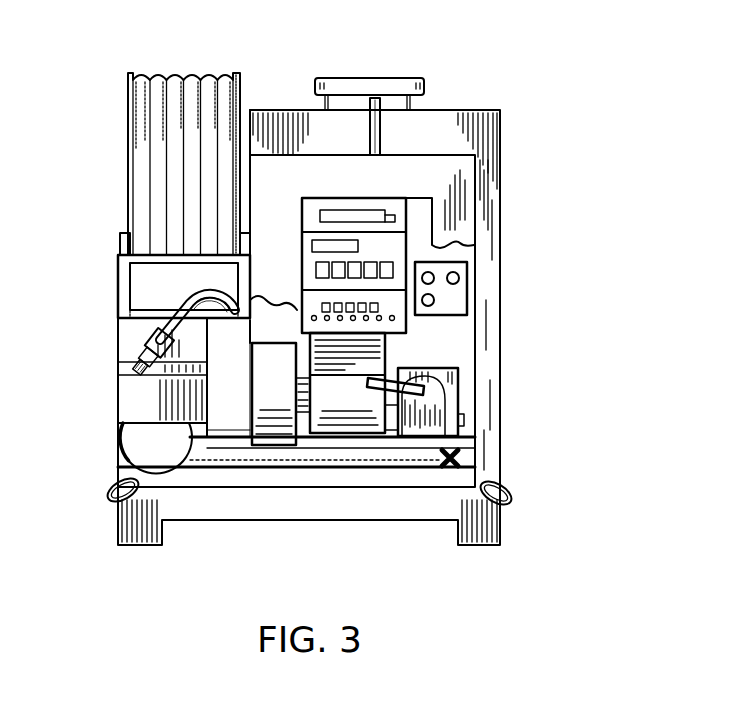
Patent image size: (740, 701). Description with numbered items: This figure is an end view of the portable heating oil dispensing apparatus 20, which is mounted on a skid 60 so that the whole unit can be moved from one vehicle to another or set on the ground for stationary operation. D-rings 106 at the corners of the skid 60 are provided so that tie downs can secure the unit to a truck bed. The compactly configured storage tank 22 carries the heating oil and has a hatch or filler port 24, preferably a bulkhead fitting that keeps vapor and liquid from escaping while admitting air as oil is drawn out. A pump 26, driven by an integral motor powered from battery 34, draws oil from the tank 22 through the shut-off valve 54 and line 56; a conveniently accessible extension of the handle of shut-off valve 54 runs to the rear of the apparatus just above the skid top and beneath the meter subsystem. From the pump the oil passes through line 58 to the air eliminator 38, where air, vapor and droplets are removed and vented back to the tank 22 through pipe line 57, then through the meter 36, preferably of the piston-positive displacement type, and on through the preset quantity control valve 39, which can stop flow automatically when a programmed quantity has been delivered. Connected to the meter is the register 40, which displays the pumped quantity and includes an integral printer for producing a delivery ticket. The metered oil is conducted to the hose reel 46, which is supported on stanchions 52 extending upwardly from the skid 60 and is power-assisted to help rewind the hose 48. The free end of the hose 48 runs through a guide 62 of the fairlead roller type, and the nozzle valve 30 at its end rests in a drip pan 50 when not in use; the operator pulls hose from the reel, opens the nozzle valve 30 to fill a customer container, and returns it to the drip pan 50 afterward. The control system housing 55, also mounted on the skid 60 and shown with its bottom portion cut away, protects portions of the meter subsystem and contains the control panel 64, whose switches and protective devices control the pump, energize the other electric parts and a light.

The apparatus 20 is at (534, 26).
The storage tank 22 is at (500, 132).
The filler port 24 is at (372, 82).
The pump 26 is at (158, 440).
The nozzle valve 30 is at (150, 330).
The battery 34 is at (450, 377).
The meter 36 is at (350, 407).
The air eliminator 38 is at (267, 440).
The preset quantity control valve 39 is at (418, 428).
The register 40 is at (412, 215).
The hose reel 46 is at (127, 88).
The hose 48 is at (174, 82).
The drip pan 50 is at (132, 392).
The stanchions 52 is at (125, 243).
The shut-off valve 54 is at (450, 468).
The control system housing 55 is at (452, 215).
The line 56 is at (295, 458).
The pipe line 57 is at (382, 130).
The line 58 is at (218, 440).
The skid 60 is at (498, 514).
The guide 62 is at (140, 307).
The control panel 64 is at (462, 283).
The D-rings 106 is at (117, 497).